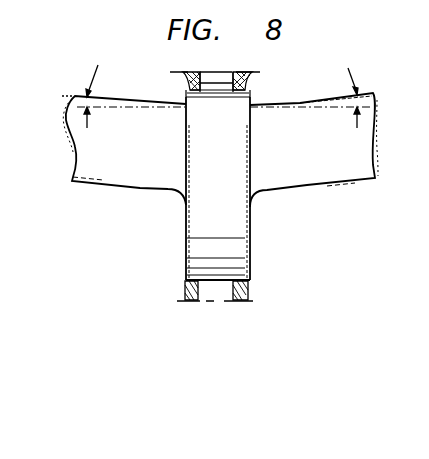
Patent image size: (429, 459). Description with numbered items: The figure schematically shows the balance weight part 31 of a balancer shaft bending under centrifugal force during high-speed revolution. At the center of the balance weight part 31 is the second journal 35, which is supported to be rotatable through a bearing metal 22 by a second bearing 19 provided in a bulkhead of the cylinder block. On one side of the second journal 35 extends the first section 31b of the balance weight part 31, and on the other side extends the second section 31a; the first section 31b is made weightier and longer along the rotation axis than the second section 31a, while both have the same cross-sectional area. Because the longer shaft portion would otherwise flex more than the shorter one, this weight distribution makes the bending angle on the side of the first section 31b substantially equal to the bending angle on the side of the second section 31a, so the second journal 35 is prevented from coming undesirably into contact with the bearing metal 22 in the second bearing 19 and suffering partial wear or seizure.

The second bearing 19 is at (236, 80).
The bearing metal 22 is at (187, 88).
The balance weight part 31 is at (220, 145).
The second section 31a is at (145, 170).
The first section 31b is at (303, 172).
The second journal 35 is at (243, 226).